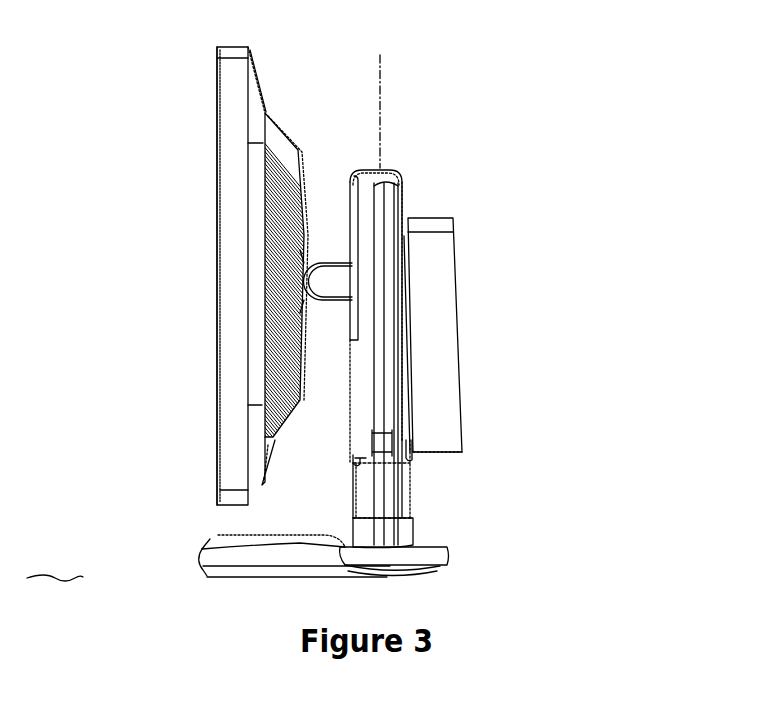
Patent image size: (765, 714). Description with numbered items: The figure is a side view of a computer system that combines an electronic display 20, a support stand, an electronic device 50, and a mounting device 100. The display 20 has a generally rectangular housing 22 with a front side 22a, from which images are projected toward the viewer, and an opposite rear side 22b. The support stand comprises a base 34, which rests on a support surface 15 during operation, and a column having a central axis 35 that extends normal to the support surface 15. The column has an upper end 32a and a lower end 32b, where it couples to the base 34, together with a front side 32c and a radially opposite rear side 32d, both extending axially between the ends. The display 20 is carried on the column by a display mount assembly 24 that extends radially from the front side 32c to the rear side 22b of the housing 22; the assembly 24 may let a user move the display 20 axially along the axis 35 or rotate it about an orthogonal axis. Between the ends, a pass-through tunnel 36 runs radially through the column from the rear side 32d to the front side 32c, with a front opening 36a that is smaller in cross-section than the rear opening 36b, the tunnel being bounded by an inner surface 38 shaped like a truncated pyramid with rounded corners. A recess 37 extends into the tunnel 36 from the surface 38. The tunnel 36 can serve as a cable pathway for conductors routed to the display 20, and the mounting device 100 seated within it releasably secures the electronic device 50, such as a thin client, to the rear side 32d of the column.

The support surface 15 is at (68, 575).
The electronic display 20 is at (266, 80).
The housing 22 is at (233, 47).
The front side 22a is at (218, 123).
The rear side 22b is at (268, 112).
The display mount assembly 24 is at (337, 303).
The upper end 32a is at (403, 172).
The lower end 32b is at (420, 536).
The front side 32c is at (348, 212).
The rear side 32d is at (406, 195).
The base 34 is at (222, 548).
The central axis 35 is at (380, 58).
The pass-through tunnel 36 is at (395, 529).
The front opening 36a is at (350, 507).
The rear opening 36b is at (414, 506).
The recess 37 is at (395, 440).
The inner surface 38 is at (356, 462).
The electronic device 50 is at (462, 337).
The mounting device 100 is at (432, 463).